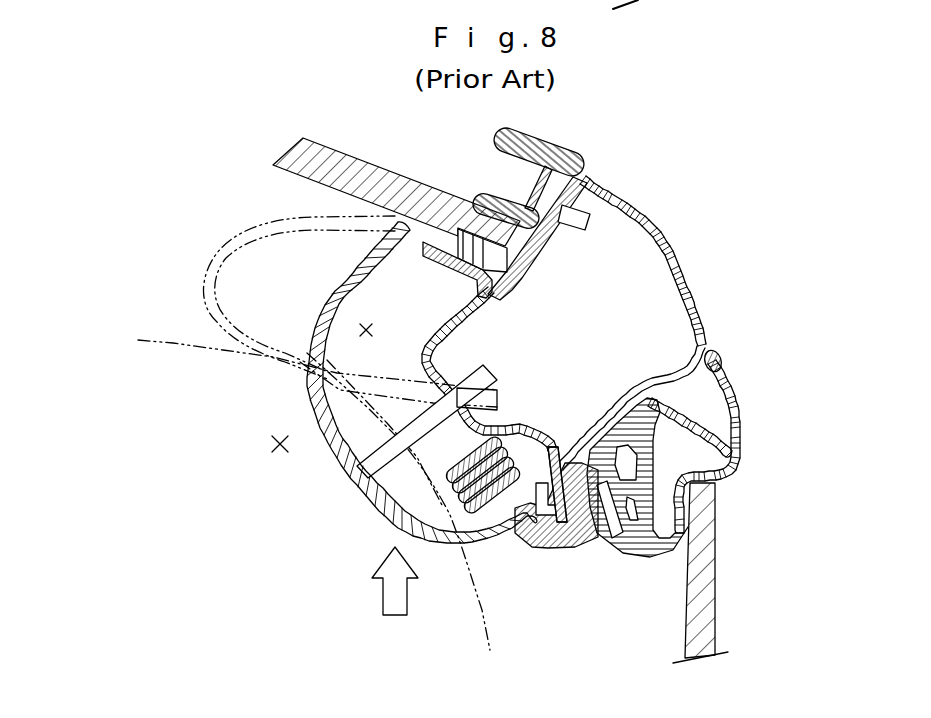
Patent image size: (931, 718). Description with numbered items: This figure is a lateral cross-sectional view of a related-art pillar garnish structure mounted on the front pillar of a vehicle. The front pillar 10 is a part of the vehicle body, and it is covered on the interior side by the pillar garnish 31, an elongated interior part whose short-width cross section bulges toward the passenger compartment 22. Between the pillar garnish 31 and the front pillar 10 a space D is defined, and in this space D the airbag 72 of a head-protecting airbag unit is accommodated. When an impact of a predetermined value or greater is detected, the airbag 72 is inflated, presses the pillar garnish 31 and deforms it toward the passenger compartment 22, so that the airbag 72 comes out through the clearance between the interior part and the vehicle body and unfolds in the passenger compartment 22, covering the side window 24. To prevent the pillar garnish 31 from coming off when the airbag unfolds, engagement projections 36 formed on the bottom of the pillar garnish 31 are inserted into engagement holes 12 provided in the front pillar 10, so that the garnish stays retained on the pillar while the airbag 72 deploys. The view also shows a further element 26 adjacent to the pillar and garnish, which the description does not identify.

The front pillar 10 is at (677, 262).
The engagement holes 12 is at (479, 383).
The passenger compartment 22 is at (272, 443).
The side window 24 is at (387, 172).
The pillar panel 26 is at (707, 572).
The pillar garnish 31 is at (232, 243).
The engagement projections 36 is at (408, 378).
The airbag 72 is at (487, 508).
The space D is at (360, 330).